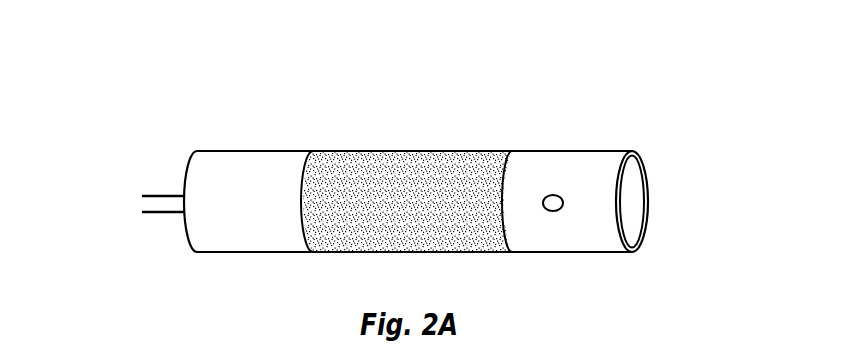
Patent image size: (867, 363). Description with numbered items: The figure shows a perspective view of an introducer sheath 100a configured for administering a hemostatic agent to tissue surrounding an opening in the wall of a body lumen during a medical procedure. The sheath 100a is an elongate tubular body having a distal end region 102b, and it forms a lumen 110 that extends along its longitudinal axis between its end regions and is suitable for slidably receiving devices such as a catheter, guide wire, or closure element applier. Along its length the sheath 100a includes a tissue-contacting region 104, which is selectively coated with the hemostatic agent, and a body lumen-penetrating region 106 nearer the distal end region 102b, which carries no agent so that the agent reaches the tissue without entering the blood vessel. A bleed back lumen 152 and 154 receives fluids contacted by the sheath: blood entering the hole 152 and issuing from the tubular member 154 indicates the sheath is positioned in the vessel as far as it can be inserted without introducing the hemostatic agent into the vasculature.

The introducer sheath 100a is at (410, 80).
The distal end region 102b is at (638, 138).
The tissue-contacting region 104 is at (412, 158).
The body lumen-penetrating region 106 is at (568, 162).
The lumen 110 is at (632, 207).
The bleed back lumen hole 152 is at (554, 211).
The bleed back lumen tubular member 154 is at (163, 193).